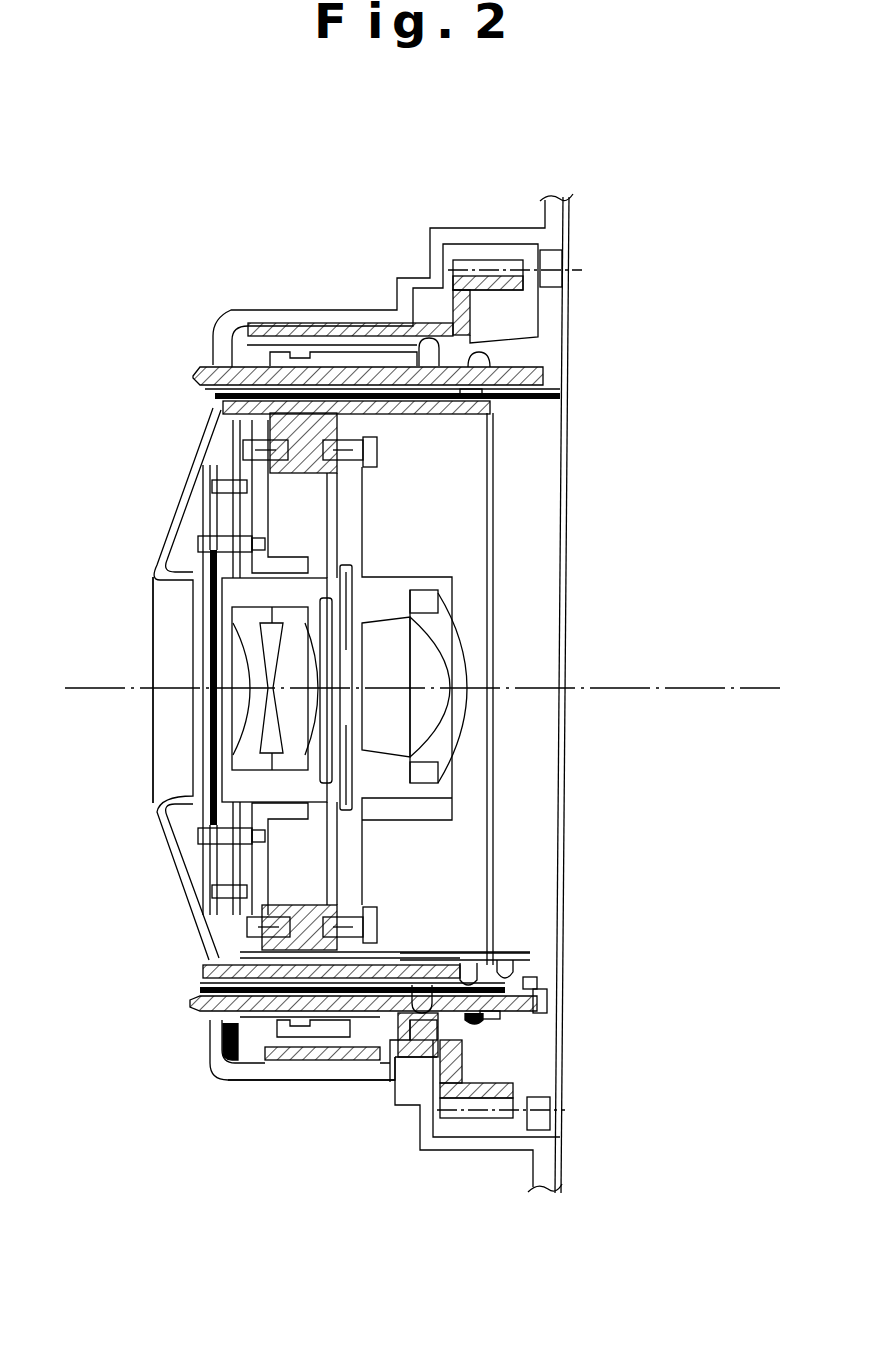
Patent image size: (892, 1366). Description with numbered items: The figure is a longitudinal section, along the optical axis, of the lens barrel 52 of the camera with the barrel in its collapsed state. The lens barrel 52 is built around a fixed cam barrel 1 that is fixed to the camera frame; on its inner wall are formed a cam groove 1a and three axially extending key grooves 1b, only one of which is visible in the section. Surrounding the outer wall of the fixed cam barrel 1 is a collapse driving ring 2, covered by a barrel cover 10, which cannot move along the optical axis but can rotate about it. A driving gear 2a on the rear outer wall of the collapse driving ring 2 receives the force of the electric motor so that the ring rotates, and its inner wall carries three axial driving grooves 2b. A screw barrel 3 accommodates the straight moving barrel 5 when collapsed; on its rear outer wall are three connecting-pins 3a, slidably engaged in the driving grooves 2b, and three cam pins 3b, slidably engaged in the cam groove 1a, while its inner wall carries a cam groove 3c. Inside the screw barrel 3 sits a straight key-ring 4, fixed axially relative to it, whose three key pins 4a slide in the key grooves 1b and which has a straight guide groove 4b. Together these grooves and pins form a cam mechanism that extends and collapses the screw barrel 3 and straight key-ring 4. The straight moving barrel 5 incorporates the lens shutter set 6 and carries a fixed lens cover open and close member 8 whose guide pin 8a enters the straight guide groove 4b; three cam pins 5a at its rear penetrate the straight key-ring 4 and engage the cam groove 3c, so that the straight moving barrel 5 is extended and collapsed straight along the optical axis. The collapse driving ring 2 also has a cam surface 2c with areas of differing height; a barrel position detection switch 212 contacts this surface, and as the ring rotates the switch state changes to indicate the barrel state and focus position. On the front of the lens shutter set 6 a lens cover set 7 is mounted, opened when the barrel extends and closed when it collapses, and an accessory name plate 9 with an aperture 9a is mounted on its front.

The lens barrel 52 is at (305, 268).
The fixed cam barrel 1 is at (552, 322).
The cam groove 1a is at (475, 1022).
The key groove 1b is at (350, 1022).
The collapse driving ring 2 is at (430, 1103).
The driving gear 2a is at (493, 1118).
The driving groove 2b is at (267, 1049).
The cam surface 2c is at (283, 1062).
The screw barrel 3 is at (192, 1003).
The connecting-pin 3a is at (410, 1022).
The cam pin 3b is at (470, 1020).
The cam groove 3c is at (485, 1012).
The straight key-ring 4 is at (532, 980).
The key pin 4a is at (553, 1003).
The straight guide groove 4b is at (422, 985).
The straight moving barrel 5 is at (462, 402).
The cam pin 5a is at (455, 953).
The lens shutter set 6 is at (428, 555).
The lens cover set 7 is at (184, 812).
The lens cover open and close member 8 is at (467, 960).
The guide pin 8a is at (510, 973).
The accessory name plate 9 is at (167, 560).
The aperture 9a is at (140, 698).
The barrel cover 10 is at (210, 1043).
The barrel position detection switch 212 is at (415, 1040).